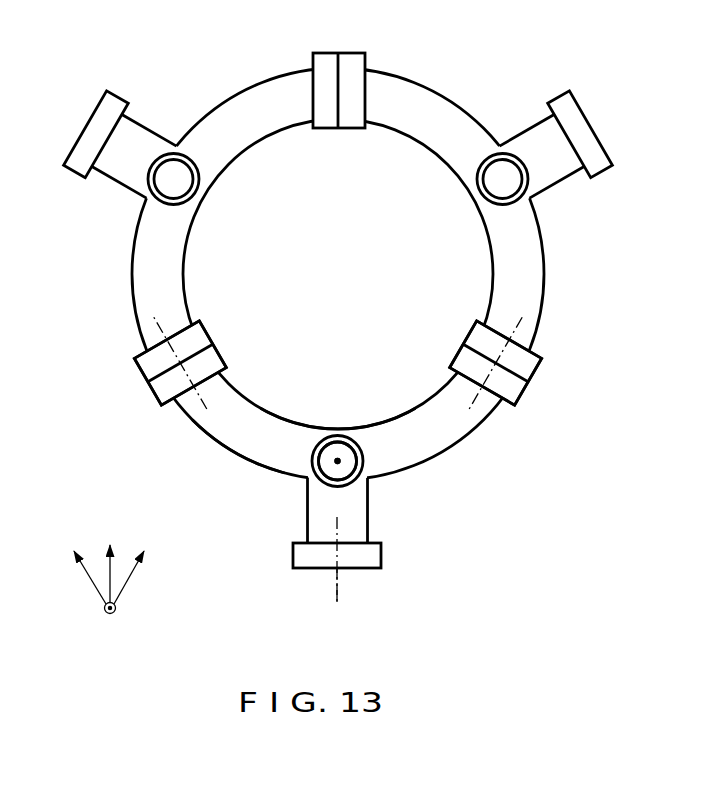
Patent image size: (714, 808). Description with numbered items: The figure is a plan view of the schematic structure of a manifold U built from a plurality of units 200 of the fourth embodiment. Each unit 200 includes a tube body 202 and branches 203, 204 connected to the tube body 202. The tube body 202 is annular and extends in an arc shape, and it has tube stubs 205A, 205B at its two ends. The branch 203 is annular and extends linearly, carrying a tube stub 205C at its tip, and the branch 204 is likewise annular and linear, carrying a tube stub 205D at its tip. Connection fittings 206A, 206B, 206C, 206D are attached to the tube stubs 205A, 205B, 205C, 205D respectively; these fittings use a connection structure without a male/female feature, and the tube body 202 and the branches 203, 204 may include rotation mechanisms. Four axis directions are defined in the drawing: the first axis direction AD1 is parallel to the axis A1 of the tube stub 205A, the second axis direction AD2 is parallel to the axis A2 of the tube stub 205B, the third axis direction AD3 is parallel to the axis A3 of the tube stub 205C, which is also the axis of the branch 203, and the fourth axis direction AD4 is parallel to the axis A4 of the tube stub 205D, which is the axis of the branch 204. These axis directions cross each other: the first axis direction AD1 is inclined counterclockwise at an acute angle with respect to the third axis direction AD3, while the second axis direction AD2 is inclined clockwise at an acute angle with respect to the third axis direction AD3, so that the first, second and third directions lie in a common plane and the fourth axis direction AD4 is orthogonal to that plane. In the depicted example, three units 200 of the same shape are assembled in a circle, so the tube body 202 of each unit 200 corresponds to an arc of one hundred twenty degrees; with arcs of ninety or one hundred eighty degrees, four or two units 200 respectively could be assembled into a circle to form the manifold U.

The manifold U is at (490, 80).
The unit 200 is at (226, 201).
The tube body 202 is at (387, 429).
The branch 203 is at (370, 517).
The branch 204 is at (308, 452).
The tube stub 205A is at (159, 360).
The tube stub 205B is at (520, 365).
The tube stub 205C is at (356, 586).
The tube stub 205D is at (347, 460).
The connection fitting 206A is at (162, 388).
The connection fitting 206B is at (513, 388).
The connection fitting 206C is at (376, 557).
The connection fitting 206D is at (324, 484).
The axis A1 is at (173, 347).
The axis A2 is at (503, 351).
The axis A3 is at (334, 579).
The axis A4 is at (322, 442).
The first axis direction AD1 is at (74, 562).
The second axis direction AD2 is at (144, 562).
The third axis direction AD3 is at (110, 556).
The fourth axis direction AD4 is at (110, 627).